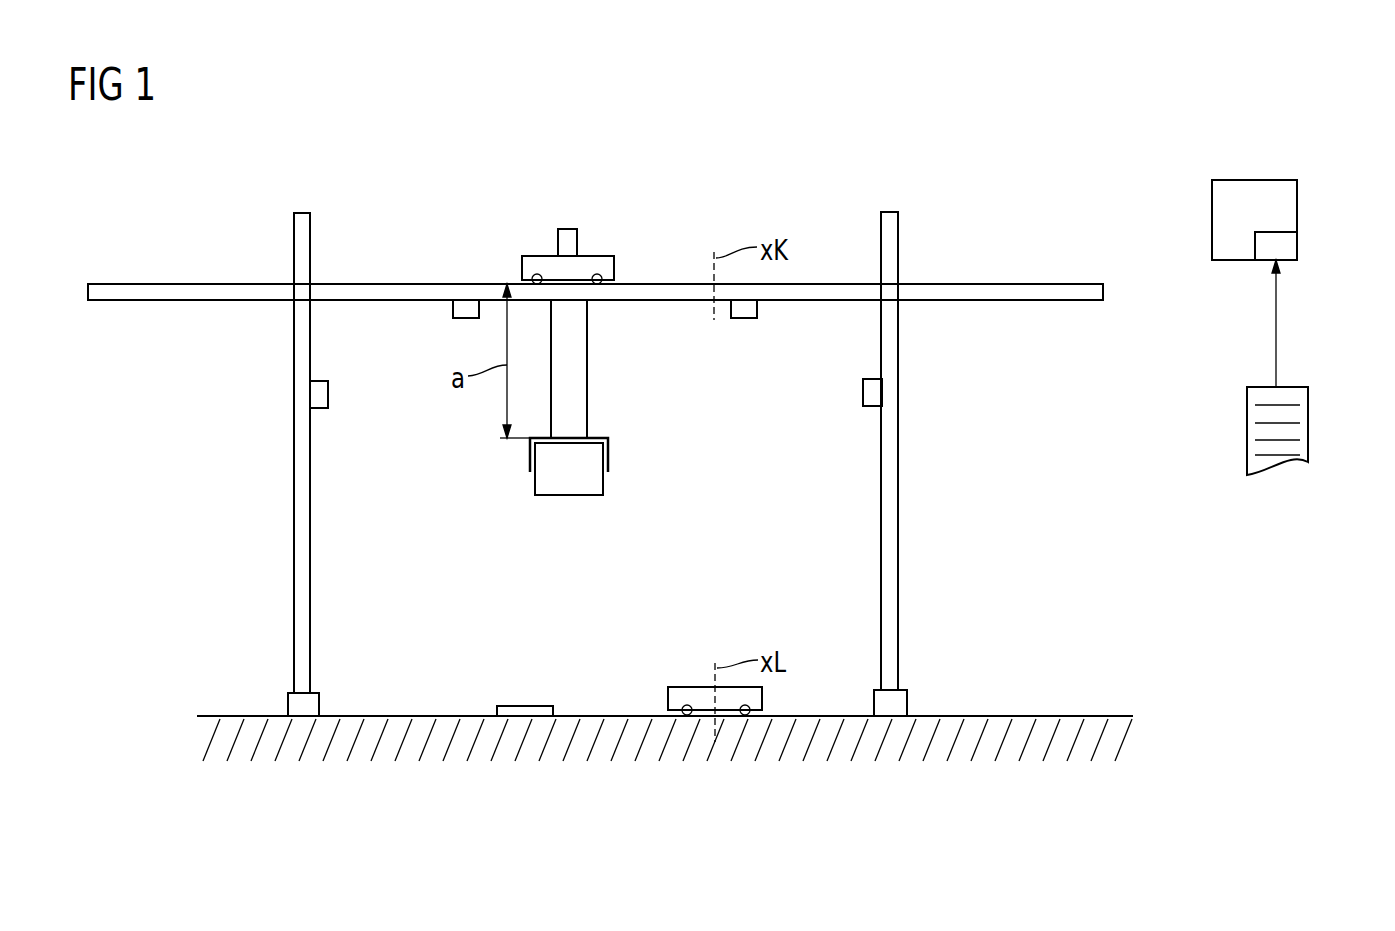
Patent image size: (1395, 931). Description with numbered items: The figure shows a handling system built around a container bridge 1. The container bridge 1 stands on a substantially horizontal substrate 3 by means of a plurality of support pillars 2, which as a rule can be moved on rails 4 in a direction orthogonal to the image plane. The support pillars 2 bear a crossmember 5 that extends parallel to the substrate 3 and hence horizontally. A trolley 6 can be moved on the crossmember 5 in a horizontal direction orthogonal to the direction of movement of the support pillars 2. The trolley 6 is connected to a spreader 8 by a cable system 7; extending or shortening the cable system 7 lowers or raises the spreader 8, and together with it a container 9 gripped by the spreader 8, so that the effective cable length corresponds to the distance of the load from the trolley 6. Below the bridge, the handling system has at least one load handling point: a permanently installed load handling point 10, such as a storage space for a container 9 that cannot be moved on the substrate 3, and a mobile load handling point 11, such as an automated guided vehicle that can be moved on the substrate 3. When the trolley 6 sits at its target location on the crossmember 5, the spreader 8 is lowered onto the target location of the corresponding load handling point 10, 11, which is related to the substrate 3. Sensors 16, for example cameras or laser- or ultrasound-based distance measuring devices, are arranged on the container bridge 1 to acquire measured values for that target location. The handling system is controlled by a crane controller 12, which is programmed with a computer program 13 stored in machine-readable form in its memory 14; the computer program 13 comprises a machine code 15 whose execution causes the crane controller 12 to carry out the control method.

The container bridge 1 is at (786, 142).
The support pillars 2 is at (302, 213).
The substrate 3 is at (197, 716).
The rails 4 is at (288, 710).
The crossmember 5 is at (155, 284).
The trolley 6 is at (532, 256).
The cable system 7 is at (552, 328).
The spreader 8 is at (608, 455).
The container 9 is at (565, 495).
The permanently installed load handling point 10 is at (527, 706).
The mobile load handling point 11 is at (686, 687).
The crane controller 12 is at (1251, 180).
The computer program 13 is at (1286, 475).
The memory 14 is at (1287, 243).
The machine code 15 is at (1300, 436).
The sensors 16 is at (568, 229).